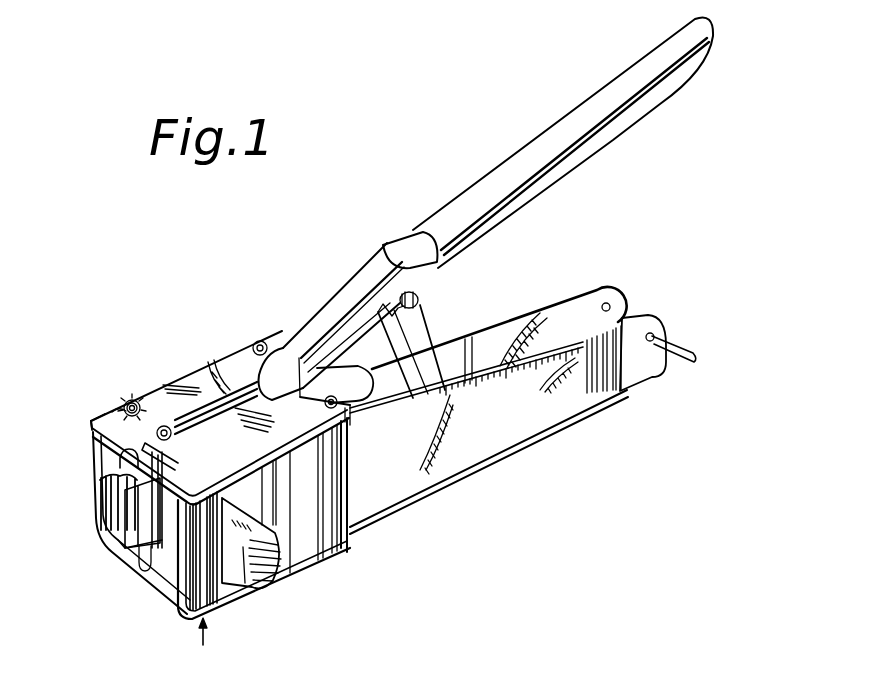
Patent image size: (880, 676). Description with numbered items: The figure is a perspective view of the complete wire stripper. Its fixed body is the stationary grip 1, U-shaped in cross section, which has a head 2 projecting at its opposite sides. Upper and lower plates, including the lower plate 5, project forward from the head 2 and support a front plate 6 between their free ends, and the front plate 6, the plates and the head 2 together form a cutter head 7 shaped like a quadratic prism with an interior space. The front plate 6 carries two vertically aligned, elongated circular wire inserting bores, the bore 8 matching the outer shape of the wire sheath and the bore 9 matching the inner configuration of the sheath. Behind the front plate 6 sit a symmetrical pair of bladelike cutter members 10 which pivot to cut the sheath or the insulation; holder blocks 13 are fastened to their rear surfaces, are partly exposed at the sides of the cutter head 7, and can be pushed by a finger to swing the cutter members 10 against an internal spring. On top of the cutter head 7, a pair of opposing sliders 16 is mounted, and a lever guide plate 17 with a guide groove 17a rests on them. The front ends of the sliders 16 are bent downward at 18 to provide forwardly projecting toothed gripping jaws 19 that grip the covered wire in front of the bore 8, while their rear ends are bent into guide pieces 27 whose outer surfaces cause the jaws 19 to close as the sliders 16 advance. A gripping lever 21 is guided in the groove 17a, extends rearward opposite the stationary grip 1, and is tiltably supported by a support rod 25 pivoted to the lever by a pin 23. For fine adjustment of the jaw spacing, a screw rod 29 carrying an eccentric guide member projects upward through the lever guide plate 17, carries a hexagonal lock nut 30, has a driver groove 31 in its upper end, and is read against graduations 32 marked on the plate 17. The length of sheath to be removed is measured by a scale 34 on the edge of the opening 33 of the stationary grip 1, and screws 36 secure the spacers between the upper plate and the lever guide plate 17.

The stationary grip 1 is at (467, 460).
The head 2 is at (320, 550).
The lower plate 5 is at (222, 598).
The front plate 6 is at (175, 583).
The cutter head 7 is at (203, 643).
The wire inserting bore 8 is at (110, 518).
The wire inserting bore 9 is at (143, 564).
The cutter member 10 is at (225, 587).
The holder block 13 is at (282, 577).
The slider 16 is at (103, 417).
The lever guide plate 17 is at (231, 362).
The guide groove 17a is at (214, 372).
The bent front end 18 is at (100, 458).
The gripping jaw 19 is at (108, 498).
The gripping lever 21 is at (495, 187).
The pin 23 is at (418, 297).
The support rod 25 is at (416, 335).
The guide piece 27 is at (343, 368).
The screw rod 29 is at (136, 404).
The lock nut 30 is at (124, 406).
The groove 31 is at (132, 404).
The graduations 32 is at (116, 412).
The opening 33 is at (497, 343).
The scale 34 is at (502, 392).
The screw 36 is at (260, 345).